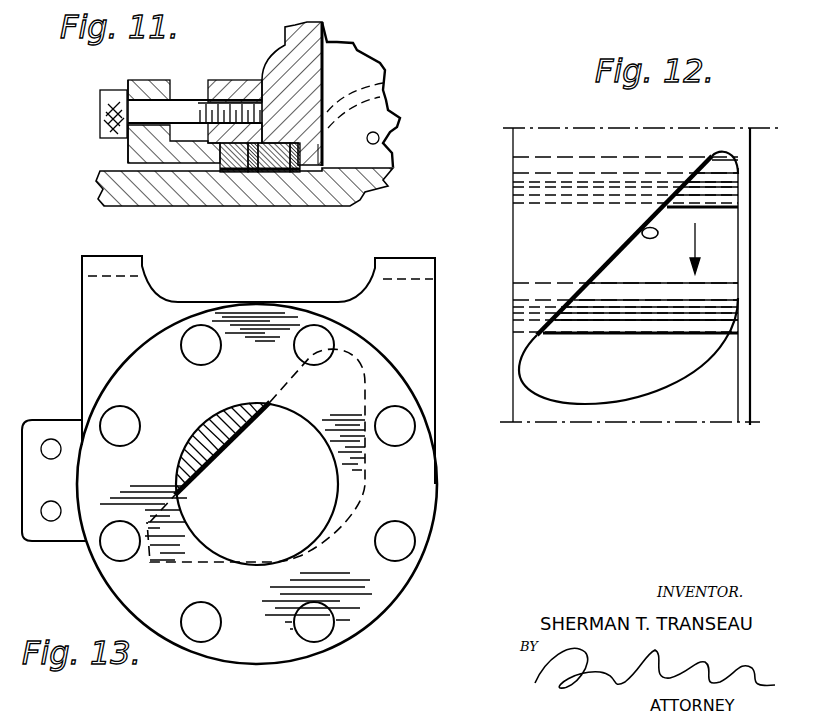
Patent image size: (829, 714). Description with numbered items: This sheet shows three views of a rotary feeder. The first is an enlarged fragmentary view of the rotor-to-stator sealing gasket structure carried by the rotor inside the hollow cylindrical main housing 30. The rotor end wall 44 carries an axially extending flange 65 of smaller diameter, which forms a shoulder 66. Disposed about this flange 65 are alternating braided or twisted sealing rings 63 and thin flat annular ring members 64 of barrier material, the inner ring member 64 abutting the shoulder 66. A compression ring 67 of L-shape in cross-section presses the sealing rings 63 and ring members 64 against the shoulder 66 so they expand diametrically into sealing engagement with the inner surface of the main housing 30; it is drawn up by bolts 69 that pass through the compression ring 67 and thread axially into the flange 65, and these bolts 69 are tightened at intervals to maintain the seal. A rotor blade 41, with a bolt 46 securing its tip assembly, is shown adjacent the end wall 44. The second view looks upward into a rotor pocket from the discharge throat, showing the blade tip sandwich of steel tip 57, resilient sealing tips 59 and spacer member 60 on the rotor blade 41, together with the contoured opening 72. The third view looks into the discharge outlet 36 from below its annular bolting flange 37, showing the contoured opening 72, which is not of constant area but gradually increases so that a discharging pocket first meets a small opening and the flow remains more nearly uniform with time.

In FIG. 11, the main housing 30 is at (99, 186).
In FIG. 12, the discharge outlet 36 is at (618, 386).
In FIG. 13, the annular bolting flange 37 is at (418, 495).
In FIG. 11, the rotor blade 41 is at (354, 60).
In FIG. 12, the rotor blade 41 is at (645, 293).
In FIG. 11, the rotor end wall 44 is at (294, 32).
In FIG. 11, the bolt 46 is at (390, 138).
In FIG. 12, the steel tip 57 is at (583, 328).
In FIG. 12, the sealing tip 59 is at (688, 307).
In FIG. 12, the spacer member 60 is at (709, 315).
In FIG. 11, the sealing ring 63 is at (232, 170).
In FIG. 11, the annular ring member 64 is at (249, 172).
In FIG. 12, the annular ring member 64 is at (609, 0).
In FIG. 11, the flange 65 is at (238, 85).
In FIG. 11, the shoulder 66 is at (314, 152).
In FIG. 11, the compression ring 67 is at (173, 80).
In FIG. 11, the bolt 69 is at (112, 104).
In FIG. 12, the contoured opening 72 is at (640, 226).
In FIG. 13, the contoured opening 72 is at (226, 456).